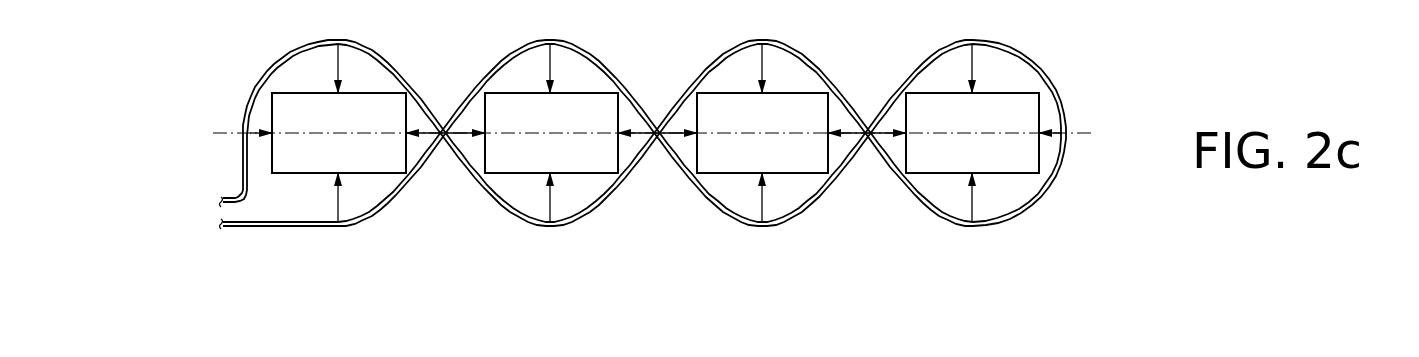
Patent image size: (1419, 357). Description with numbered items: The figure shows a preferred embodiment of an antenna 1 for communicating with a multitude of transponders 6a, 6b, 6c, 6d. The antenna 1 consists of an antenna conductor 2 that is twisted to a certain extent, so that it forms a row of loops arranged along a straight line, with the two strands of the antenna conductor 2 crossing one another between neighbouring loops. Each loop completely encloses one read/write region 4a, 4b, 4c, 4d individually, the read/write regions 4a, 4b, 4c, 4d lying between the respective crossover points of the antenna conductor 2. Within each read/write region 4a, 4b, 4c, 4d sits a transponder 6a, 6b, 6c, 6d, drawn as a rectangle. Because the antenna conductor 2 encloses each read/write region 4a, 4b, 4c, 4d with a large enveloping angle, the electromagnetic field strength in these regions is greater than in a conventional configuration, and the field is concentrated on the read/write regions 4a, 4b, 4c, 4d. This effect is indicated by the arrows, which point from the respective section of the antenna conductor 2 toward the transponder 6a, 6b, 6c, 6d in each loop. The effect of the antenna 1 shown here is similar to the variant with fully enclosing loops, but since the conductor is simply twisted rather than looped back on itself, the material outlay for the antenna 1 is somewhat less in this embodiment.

The antenna 1 is at (447, 168).
The antenna conductor 2 is at (482, 192).
The read/write region 4a is at (317, 60).
The read/write region 4b is at (528, 60).
The read/write region 4c is at (740, 60).
The read/write region 4d is at (950, 60).
The transponder 6a is at (370, 103).
The transponder 6b is at (582, 103).
The transponder 6c is at (793, 103).
The transponder 6d is at (1003, 103).